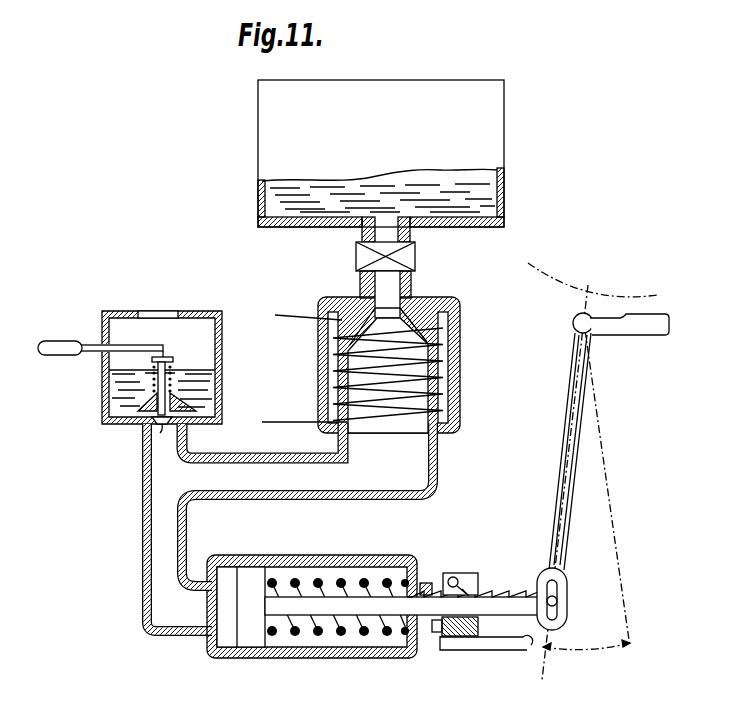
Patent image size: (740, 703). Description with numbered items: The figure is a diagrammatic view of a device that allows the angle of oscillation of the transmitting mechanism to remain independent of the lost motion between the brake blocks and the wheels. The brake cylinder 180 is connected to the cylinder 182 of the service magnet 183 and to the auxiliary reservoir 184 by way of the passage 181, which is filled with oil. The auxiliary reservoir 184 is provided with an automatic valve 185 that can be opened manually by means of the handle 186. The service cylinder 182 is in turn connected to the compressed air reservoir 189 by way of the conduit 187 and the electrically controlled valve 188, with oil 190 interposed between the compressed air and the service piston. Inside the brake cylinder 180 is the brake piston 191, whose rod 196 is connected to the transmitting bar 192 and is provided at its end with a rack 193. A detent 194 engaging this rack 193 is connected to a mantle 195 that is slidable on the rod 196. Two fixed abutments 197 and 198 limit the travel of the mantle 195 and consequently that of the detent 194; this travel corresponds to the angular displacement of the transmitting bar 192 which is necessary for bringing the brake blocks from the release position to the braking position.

The brake cylinder 180 is at (387, 553).
The passage 181 is at (242, 457).
The cylinder of service magnet 182 is at (450, 372).
The service magnet 183 is at (443, 335).
The auxiliary reservoir 184 is at (220, 378).
The automatic valve 185 is at (163, 433).
The handle 186 is at (73, 354).
The conduit 187 is at (392, 289).
The electrically controlled valve 188 is at (407, 252).
The compressed air reservoir 189 is at (483, 145).
The oil 190 is at (400, 450).
The brake piston 191 is at (247, 625).
The transmitting bar 192 is at (553, 507).
The rack 193 is at (497, 590).
The detent 194 is at (480, 573).
The mantle 195 is at (478, 643).
The rod 196 is at (308, 610).
The fixed abutment 197 is at (437, 630).
The fixed abutment 198 is at (533, 645).